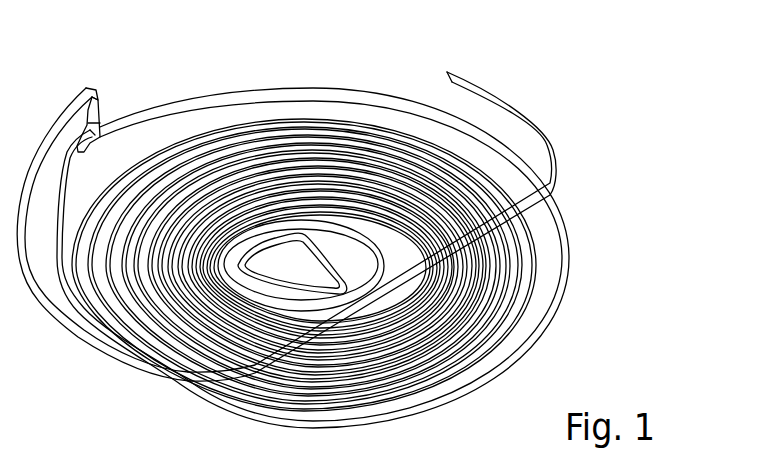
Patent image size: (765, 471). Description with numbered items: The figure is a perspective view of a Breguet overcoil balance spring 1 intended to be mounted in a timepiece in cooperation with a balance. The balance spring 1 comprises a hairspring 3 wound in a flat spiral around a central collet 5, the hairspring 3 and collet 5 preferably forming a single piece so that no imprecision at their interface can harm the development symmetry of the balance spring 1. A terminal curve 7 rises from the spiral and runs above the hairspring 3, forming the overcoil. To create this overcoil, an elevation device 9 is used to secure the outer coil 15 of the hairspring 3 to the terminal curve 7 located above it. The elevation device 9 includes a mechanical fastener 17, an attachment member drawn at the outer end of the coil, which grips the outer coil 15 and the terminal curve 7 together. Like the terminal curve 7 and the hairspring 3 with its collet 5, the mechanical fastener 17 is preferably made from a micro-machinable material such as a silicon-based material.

The Breguet overcoil balance spring 1 is at (546, 66).
The hairspring 3 is at (570, 252).
The collet 5 is at (340, 268).
The terminal curve 7 is at (540, 126).
The elevation device 9 is at (89, 72).
The outer coil 15 is at (218, 98).
The mechanical fastener 17 is at (97, 124).